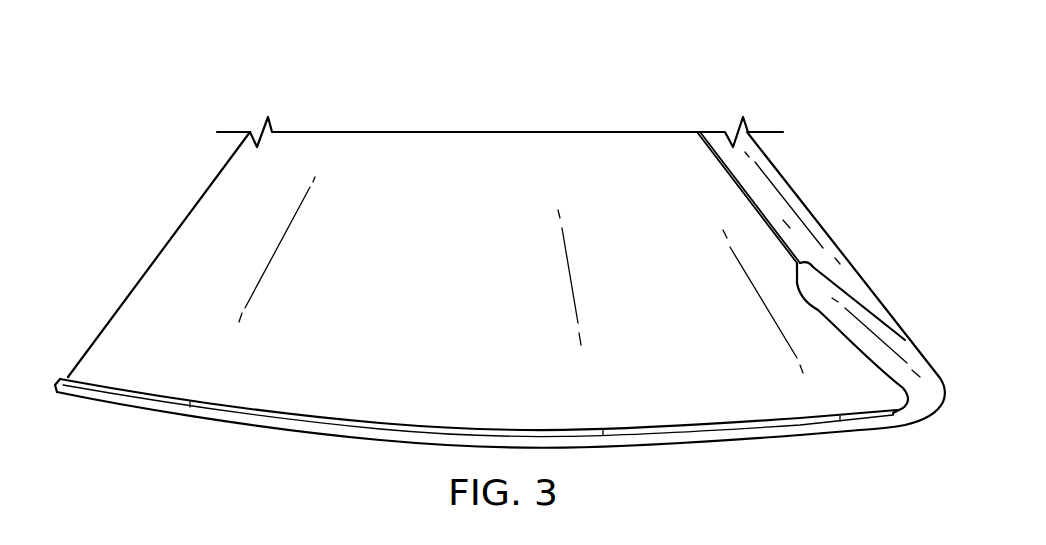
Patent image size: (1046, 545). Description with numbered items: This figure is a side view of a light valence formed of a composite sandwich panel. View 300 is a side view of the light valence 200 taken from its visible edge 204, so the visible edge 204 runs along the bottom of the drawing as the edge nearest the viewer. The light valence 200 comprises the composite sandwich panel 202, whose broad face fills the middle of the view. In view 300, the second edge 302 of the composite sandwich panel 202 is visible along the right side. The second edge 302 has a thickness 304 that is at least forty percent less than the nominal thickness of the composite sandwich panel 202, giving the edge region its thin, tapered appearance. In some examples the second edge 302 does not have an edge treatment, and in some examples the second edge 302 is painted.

The view 300 is at (307, 77).
The light valence 200 is at (192, 215).
The composite sandwich panel 202 is at (387, 248).
The second edge 302 is at (717, 158).
The thickness 304 is at (738, 191).
The visible edge 204 is at (465, 425).